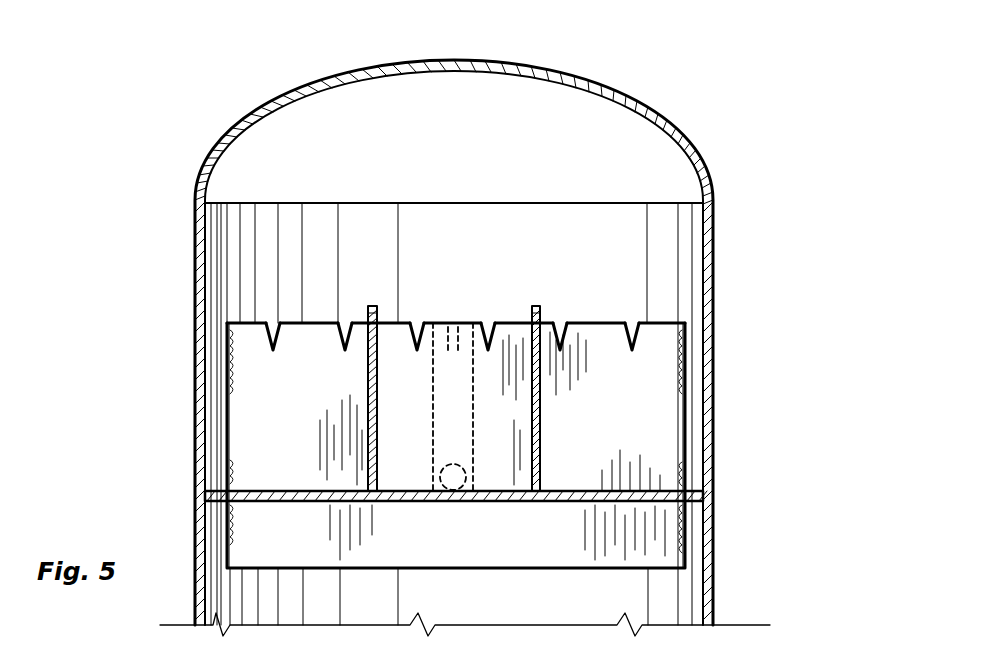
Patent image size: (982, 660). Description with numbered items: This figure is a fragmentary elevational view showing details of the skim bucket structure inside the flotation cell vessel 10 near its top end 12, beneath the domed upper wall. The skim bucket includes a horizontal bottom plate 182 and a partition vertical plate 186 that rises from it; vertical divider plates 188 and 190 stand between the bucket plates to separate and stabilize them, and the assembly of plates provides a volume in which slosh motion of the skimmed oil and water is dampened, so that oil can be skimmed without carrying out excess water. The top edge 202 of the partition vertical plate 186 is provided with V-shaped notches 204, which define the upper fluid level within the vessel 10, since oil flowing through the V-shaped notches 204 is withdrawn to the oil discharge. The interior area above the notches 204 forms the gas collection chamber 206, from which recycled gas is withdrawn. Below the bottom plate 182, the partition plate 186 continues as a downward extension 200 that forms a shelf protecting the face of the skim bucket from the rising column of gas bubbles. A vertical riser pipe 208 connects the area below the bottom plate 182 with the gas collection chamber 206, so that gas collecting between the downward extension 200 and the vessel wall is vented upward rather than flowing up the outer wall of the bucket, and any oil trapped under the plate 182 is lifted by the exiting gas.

The vessel 10 is at (713, 420).
The top end 12 is at (562, 72).
The horizontal bottom plate 182 is at (402, 502).
The partition vertical plate 186 is at (655, 360).
The vertical divider plate 188 is at (540, 428).
The vertical divider plate 190 is at (366, 415).
The downward extension 200 is at (553, 537).
The top edge 202 is at (598, 322).
The V-shaped notches 204 is at (488, 327).
The gas collection chamber 206 is at (476, 152).
The vertical riser pipe 208 is at (433, 400).